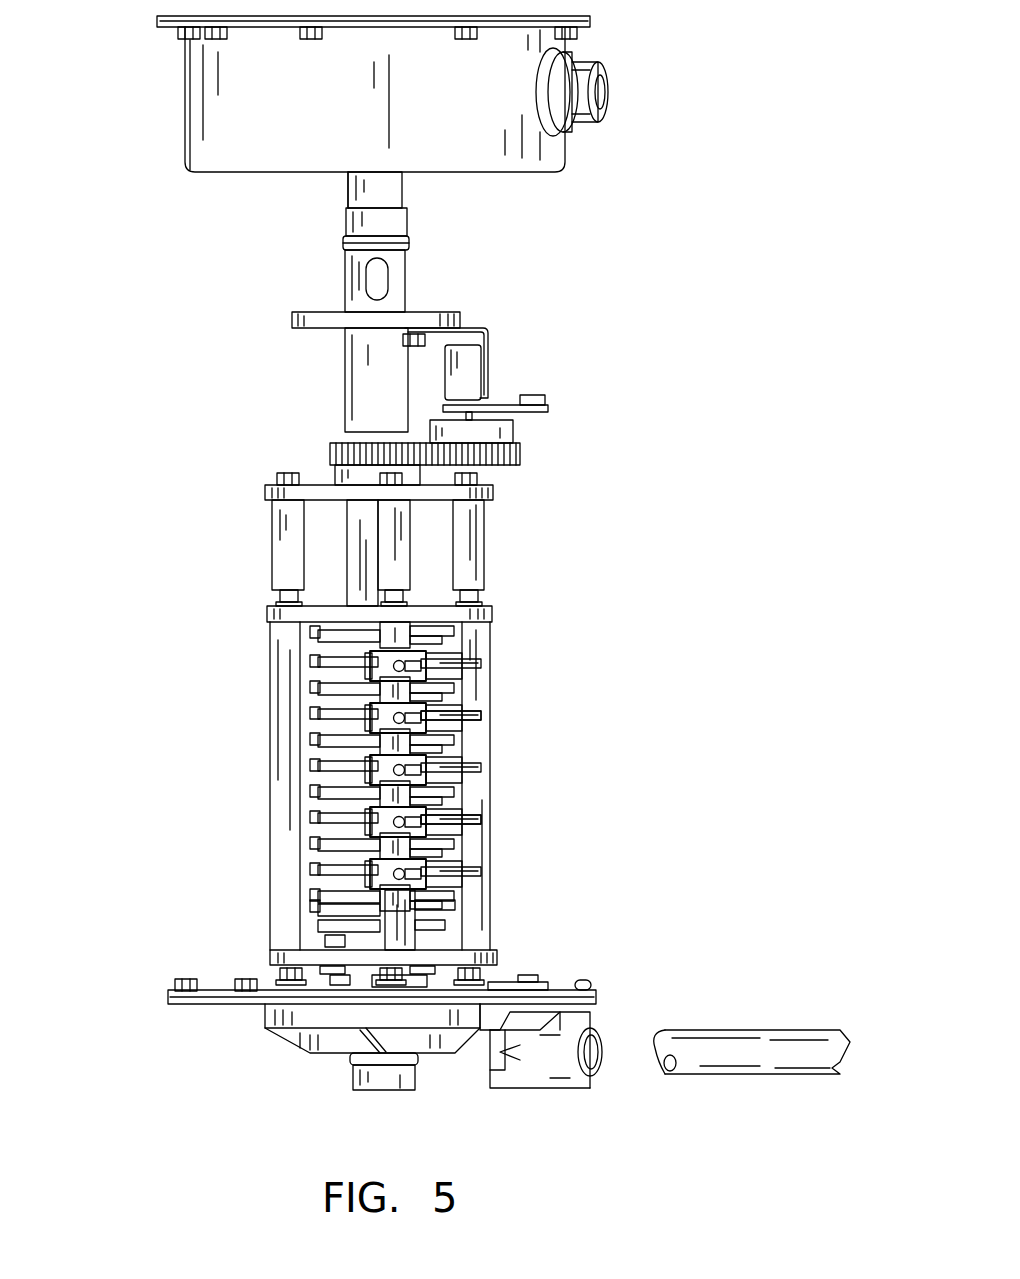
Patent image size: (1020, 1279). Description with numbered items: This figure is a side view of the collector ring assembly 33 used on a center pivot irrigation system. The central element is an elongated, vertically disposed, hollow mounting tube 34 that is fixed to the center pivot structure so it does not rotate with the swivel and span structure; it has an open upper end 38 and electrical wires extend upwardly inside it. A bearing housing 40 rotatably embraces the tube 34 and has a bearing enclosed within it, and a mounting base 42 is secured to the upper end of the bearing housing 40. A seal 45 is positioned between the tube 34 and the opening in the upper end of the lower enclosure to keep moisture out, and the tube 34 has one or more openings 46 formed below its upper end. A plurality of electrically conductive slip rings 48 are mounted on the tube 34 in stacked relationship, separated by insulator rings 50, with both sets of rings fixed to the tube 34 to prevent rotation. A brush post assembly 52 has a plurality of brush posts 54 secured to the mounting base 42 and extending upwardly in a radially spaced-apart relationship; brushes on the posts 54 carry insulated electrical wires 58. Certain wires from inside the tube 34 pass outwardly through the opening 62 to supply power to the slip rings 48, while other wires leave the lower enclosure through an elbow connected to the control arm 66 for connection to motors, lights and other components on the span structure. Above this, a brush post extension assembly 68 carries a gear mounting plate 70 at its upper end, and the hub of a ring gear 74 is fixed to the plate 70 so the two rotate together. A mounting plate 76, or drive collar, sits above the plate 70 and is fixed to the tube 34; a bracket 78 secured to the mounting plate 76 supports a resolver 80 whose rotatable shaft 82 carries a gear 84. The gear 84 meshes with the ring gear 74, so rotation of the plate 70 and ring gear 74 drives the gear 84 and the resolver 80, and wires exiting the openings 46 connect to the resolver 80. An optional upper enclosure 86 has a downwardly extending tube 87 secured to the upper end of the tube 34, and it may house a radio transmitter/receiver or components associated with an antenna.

The collector ring assembly 33 is at (242, 449).
The mounting tube 34 is at (405, 222).
The open upper end 38 is at (362, 207).
The bearing housing 40 is at (310, 1042).
The mounting base 42 is at (595, 990).
The seal 45 is at (409, 244).
The openings 46 is at (380, 282).
The slip rings 48 is at (330, 645).
The insulator rings 50 is at (330, 870).
The brush post assembly 52 is at (275, 781).
The brush posts 54 is at (490, 790).
The insulated electrical wires 58 is at (475, 715).
The opening 62 is at (345, 540).
The control arm 66 is at (740, 1030).
The brush post extension assembly 68 is at (498, 558).
The gear mounting plate 70 is at (492, 492).
The ring gear 74 is at (325, 448).
The mounting plate 76 is at (295, 318).
The bracket 78 is at (485, 332).
The resolver 80 is at (470, 372).
The rotatable shaft 82 is at (475, 418).
The gear 84 is at (520, 453).
The enclosure 86 is at (217, 80).
The tube 87 is at (385, 195).